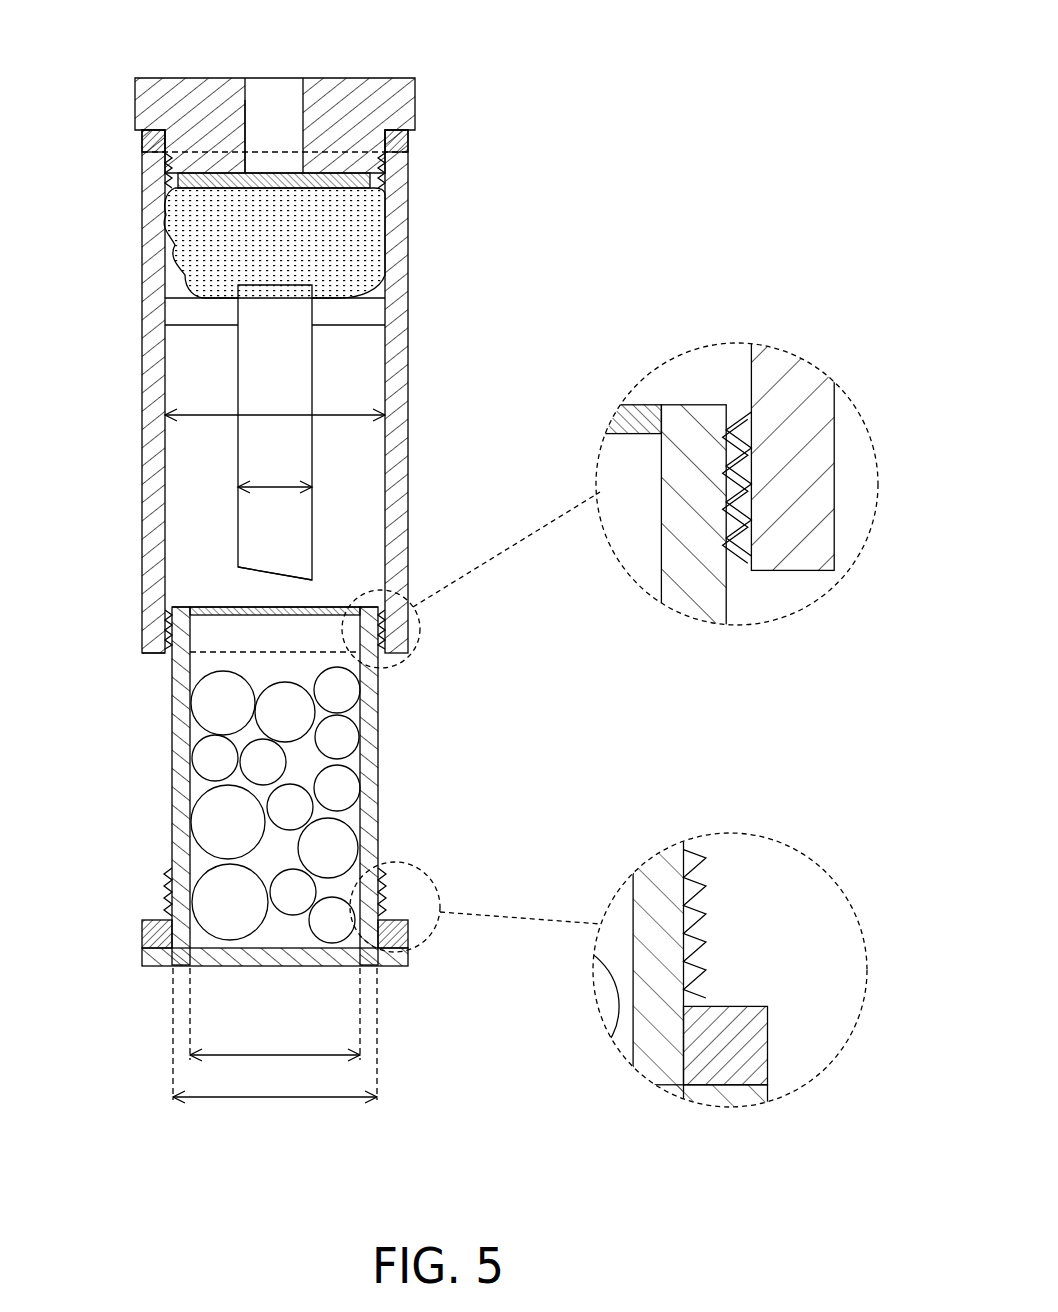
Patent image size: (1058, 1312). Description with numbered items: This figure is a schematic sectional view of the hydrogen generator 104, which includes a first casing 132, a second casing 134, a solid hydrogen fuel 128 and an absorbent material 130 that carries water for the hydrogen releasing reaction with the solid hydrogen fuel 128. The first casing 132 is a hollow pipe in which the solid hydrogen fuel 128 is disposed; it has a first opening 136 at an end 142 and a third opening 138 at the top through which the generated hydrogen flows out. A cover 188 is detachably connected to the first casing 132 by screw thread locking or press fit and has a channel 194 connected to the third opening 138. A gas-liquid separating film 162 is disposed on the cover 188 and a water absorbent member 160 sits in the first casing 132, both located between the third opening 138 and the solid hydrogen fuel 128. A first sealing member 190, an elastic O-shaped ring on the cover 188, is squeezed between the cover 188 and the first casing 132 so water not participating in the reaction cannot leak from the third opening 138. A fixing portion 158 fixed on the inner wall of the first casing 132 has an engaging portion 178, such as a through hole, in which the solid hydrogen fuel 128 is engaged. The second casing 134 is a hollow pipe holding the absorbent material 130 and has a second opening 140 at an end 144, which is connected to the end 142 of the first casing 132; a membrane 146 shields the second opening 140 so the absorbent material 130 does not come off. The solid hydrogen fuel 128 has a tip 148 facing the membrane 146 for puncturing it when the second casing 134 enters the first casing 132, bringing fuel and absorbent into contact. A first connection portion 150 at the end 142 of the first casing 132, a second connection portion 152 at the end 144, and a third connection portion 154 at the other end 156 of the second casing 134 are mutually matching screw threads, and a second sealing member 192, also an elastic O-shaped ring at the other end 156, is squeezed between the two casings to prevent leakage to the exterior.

The hydrogen generator 104 is at (712, 29).
The solid hydrogen fuel 128 is at (312, 438).
The absorbent material 130 is at (348, 740).
The first casing 132 is at (407, 383).
The second casing 134 is at (370, 787).
The first opening 136 is at (240, 657).
The third opening 138 is at (287, 147).
The second opening 140 is at (222, 578).
The end of the first casing 142 is at (155, 662).
The end of the second casing 144 is at (373, 597).
The membrane 146 is at (203, 608).
The tip 148 is at (318, 582).
The first connection portion 150 is at (743, 542).
The second connection portion 152 is at (738, 530).
The third connection portion 154 is at (705, 900).
The other end of the second casing 156 is at (372, 973).
The fixing portion 158 is at (370, 313).
The water absorbent member 160 is at (363, 227).
The gas-liquid separating film 162 is at (373, 178).
The engaging portion 178 is at (238, 312).
The cover 188 is at (405, 107).
The first sealing member 190 is at (142, 133).
The second sealing member 192 is at (750, 1010).
The channel 194 is at (267, 115).